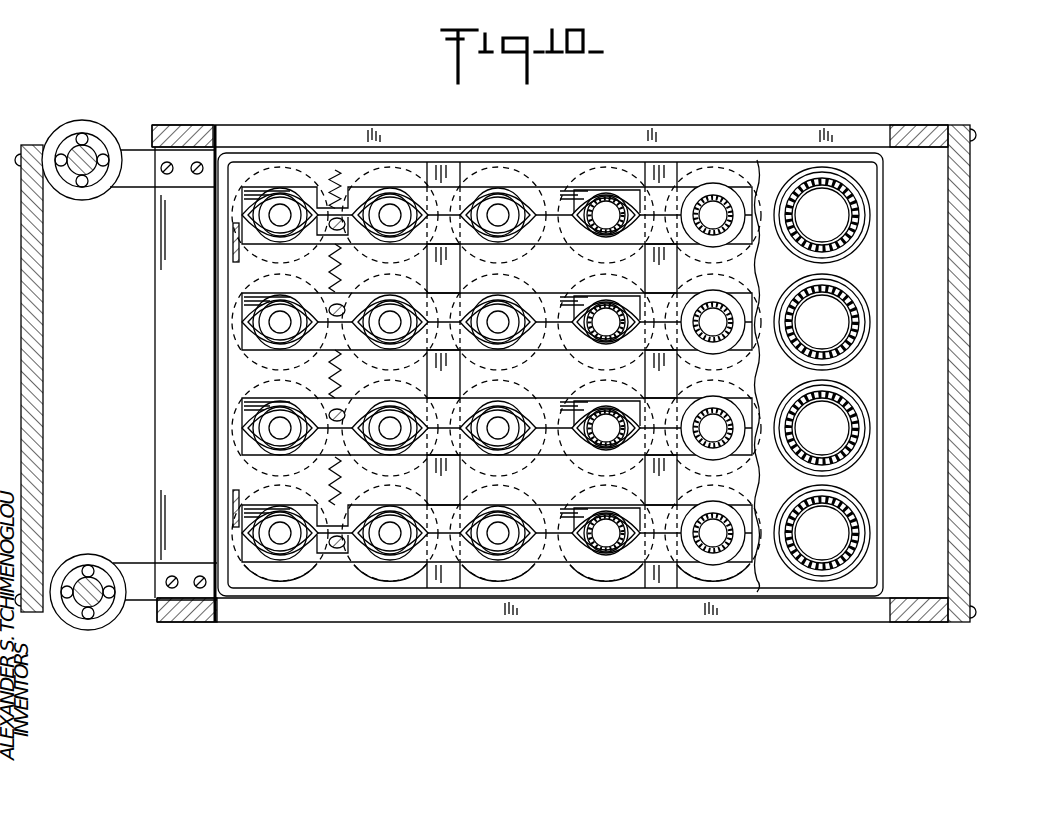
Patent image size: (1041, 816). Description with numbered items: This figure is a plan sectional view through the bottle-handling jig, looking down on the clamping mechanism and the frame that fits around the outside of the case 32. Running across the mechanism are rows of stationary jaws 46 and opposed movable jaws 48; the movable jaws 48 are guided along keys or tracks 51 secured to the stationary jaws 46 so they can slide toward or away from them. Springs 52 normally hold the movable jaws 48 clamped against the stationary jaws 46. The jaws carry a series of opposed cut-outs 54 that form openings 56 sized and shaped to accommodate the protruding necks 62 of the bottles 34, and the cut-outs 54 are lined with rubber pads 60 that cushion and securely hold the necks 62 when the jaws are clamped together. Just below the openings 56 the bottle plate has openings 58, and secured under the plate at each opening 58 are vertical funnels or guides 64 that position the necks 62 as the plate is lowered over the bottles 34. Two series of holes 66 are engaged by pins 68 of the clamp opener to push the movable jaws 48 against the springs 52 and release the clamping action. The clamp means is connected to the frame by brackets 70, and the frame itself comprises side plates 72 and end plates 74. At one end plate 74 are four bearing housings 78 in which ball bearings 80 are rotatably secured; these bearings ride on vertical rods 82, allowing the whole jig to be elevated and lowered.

The case 32 is at (850, 216).
The bottles 34 is at (883, 252).
The stationary jaws 46 is at (245, 212).
The movable jaws 48 is at (242, 192).
The keys or tracks 51 is at (462, 252).
The springs 52 is at (335, 172).
The cut-outs 54 is at (590, 310).
The openings 56 is at (318, 240).
The openings 58 is at (718, 185).
The rubber pads 60 is at (600, 205).
The protruding necks 62 is at (275, 200).
The funnels or guides 64 is at (758, 200).
The holes 66 is at (350, 238).
The pins 68 is at (333, 235).
The brackets 70 is at (233, 245).
The side plates 72 is at (222, 130).
The end plates 74 is at (32, 147).
The bearing housings 78 is at (122, 148).
The ball bearings 80 is at (61, 155).
The vertical members or rods 82 is at (84, 140).